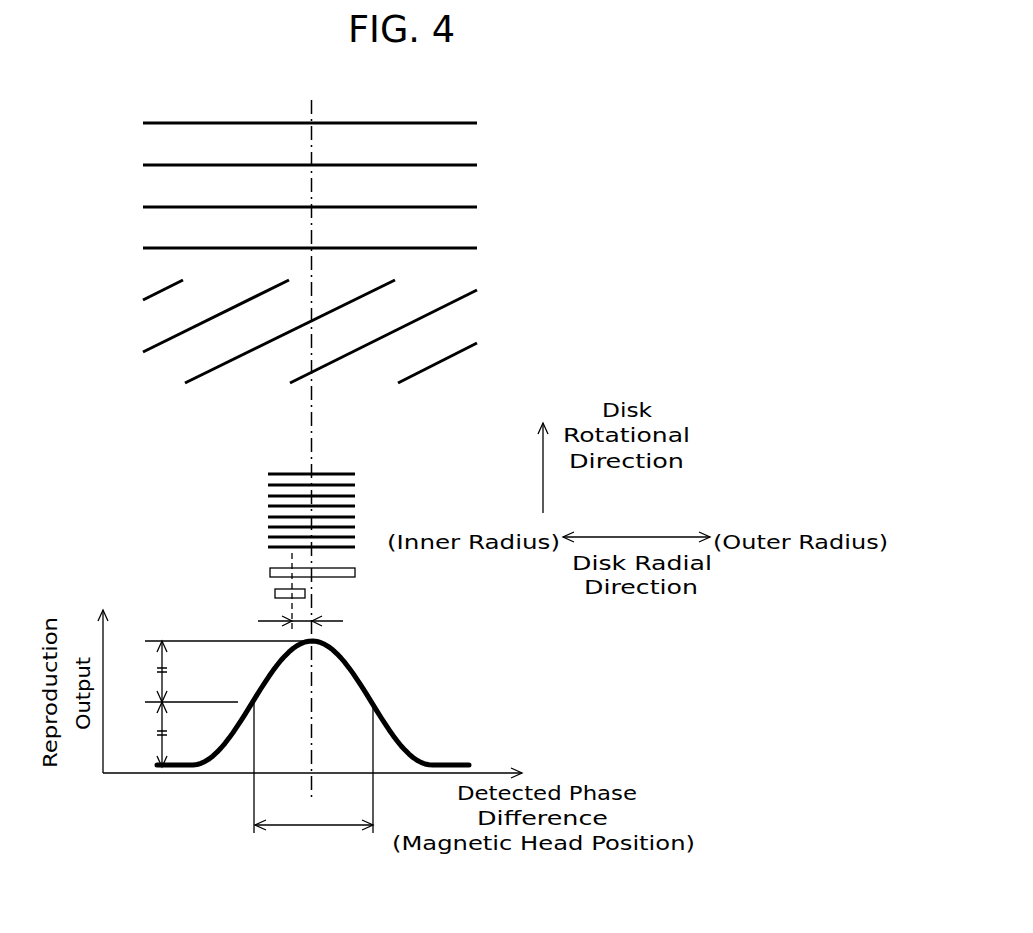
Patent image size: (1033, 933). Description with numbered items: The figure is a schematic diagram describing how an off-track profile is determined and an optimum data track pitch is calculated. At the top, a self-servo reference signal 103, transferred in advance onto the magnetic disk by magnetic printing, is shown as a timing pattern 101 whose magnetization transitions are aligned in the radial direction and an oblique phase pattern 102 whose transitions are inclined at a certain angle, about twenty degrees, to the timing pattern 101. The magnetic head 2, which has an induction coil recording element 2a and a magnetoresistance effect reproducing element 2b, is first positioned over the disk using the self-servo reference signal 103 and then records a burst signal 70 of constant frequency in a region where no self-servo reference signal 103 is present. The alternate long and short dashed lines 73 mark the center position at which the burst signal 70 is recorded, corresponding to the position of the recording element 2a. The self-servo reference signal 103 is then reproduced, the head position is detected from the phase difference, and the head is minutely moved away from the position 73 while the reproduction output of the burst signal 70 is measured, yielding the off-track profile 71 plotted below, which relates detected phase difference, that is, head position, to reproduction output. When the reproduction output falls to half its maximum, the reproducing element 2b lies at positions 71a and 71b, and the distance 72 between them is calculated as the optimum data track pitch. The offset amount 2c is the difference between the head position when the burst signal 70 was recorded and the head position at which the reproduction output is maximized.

The timing pattern 101 is at (493, 121).
The oblique phase pattern 102 is at (350, 330).
The self-servo reference signal 103 is at (403, 252).
The alternate long and short dashed lines 73 is at (312, 438).
The burst signal 70 is at (362, 474).
The magnetic head 2 is at (296, 582).
The recording element 2a is at (276, 567).
The reproducing element 2b is at (283, 590).
The offset amount 2c is at (303, 620).
The off-track profile 71 is at (352, 660).
The position 71a is at (374, 706).
The position 71b is at (252, 702).
The distance 72 is at (293, 826).